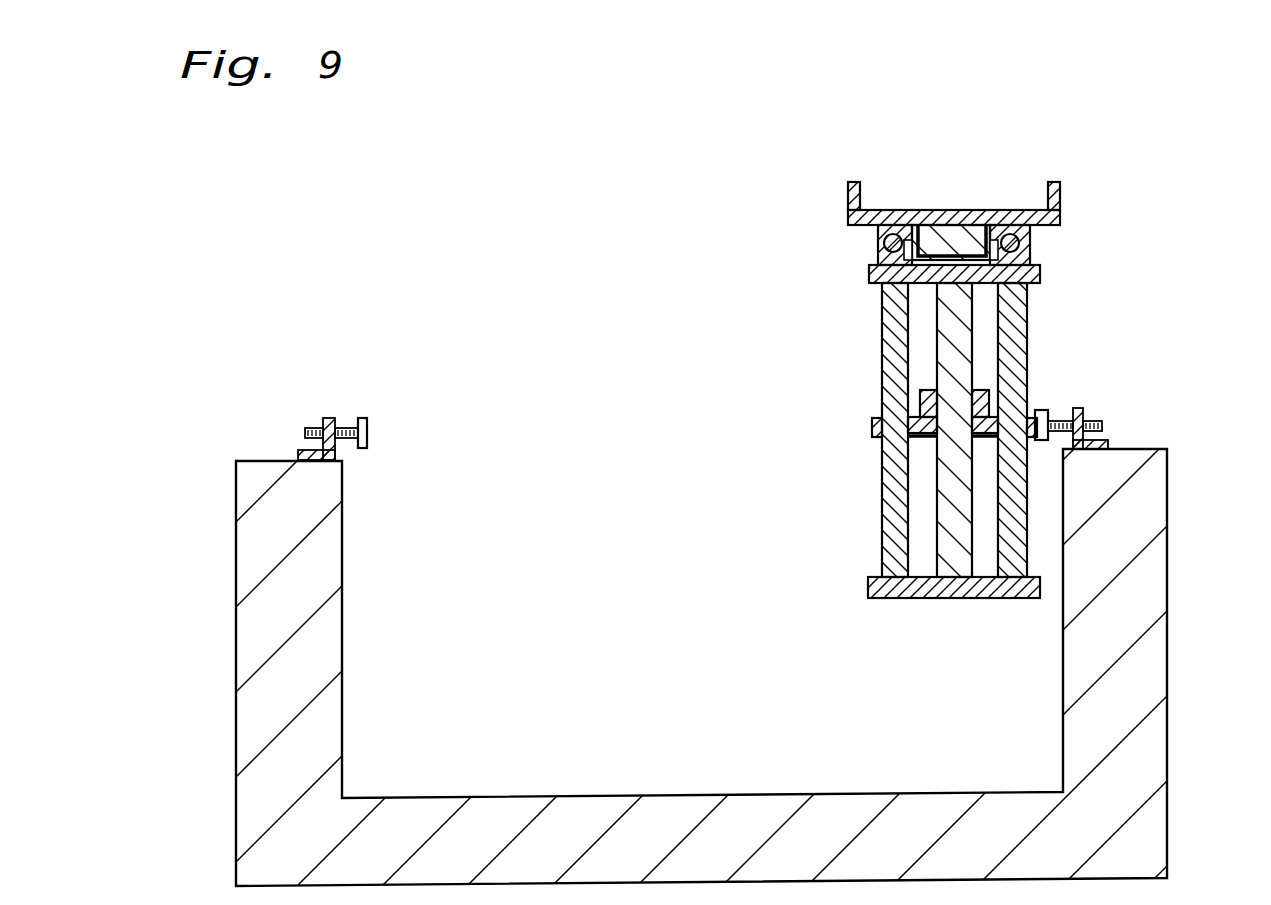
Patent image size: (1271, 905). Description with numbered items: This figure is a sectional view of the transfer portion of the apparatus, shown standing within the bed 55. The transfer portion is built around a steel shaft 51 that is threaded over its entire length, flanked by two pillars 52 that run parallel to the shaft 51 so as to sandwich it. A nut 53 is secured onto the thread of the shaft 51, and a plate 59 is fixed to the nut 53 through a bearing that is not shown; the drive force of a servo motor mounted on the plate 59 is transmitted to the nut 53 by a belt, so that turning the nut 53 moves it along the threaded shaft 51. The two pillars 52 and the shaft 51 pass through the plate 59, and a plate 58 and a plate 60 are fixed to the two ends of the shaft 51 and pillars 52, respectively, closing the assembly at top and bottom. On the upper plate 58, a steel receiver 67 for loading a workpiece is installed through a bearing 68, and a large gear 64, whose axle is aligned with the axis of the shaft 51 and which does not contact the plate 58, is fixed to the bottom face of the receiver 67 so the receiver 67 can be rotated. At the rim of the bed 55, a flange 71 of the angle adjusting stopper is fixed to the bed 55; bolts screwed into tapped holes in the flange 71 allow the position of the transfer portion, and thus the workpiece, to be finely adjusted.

The steel shaft 51 is at (947, 530).
The pillars 52 is at (1015, 358).
The nut 53 is at (922, 403).
The bed 55 is at (1155, 503).
The plate 58 is at (870, 273).
The plate 59 is at (875, 424).
The plate 60 is at (943, 590).
The large gear 64 is at (967, 230).
The steel receiver 67 is at (848, 198).
The bearing 68 is at (1023, 245).
The flange 71 is at (1083, 413).